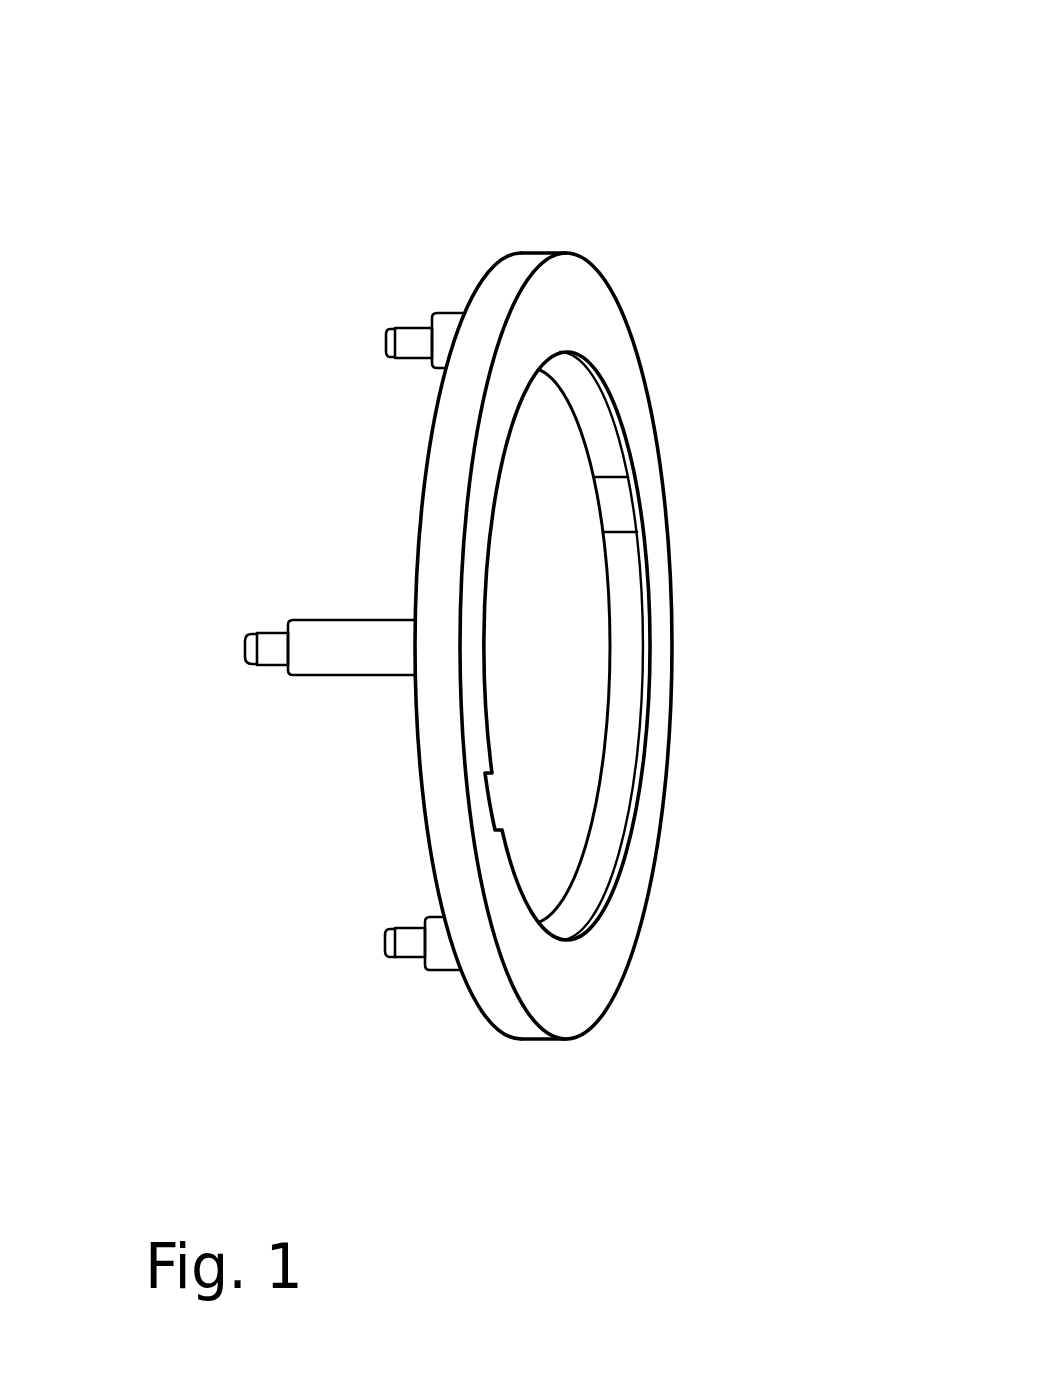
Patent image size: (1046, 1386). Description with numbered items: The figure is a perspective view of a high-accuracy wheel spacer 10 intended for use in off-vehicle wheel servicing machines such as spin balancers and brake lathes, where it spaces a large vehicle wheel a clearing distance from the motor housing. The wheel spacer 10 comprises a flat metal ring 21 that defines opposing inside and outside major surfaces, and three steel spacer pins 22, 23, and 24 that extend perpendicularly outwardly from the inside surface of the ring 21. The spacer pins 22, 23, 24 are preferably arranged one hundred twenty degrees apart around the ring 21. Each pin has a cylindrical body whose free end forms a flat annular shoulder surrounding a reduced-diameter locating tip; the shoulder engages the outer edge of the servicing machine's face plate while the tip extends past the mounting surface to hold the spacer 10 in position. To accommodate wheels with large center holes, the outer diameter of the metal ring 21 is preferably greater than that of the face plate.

The wheel spacer 10 is at (620, 193).
The flat metal ring 21 is at (578, 320).
The spacer pin 22 is at (456, 288).
The spacer pin 23 is at (345, 708).
The spacer pin 24 is at (442, 1012).